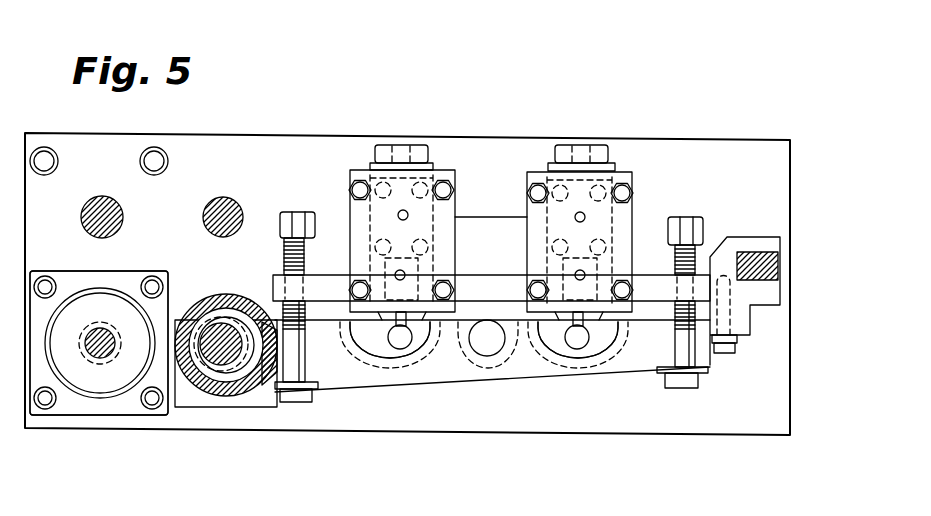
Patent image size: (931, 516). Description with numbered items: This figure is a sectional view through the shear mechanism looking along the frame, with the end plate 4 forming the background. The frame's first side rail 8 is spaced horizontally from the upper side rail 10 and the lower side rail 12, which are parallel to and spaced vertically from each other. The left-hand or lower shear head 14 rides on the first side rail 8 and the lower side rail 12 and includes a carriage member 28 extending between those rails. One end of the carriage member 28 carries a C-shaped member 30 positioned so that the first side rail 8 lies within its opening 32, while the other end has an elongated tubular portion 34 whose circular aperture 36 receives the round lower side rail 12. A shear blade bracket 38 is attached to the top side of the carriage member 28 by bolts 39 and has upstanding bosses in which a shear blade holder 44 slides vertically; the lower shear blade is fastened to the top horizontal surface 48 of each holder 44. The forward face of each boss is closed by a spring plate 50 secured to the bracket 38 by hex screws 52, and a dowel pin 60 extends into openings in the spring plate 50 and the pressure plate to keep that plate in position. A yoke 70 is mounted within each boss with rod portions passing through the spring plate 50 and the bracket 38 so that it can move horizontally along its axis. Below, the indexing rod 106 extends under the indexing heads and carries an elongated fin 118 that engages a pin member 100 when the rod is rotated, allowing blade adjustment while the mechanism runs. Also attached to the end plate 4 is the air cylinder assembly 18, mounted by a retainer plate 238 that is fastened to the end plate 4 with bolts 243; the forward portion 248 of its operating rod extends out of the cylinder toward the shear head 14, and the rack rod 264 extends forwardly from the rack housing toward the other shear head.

The end plate 4 is at (244, 146).
The rack rod 264 is at (102, 208).
The upper side rail 10 is at (222, 212).
The air cylinder assembly 18 is at (85, 378).
The bolts 243 is at (50, 283).
The retainer plate 238 is at (80, 284).
The forward portion of the operating rod 248 is at (105, 355).
The lower side rail 12 is at (222, 355).
The elongated tubular portion 34 is at (232, 305).
The circular aperture 36 is at (212, 318).
The carriage member 28 is at (540, 367).
The pin members 100 is at (418, 352).
The indexing rod 106 is at (400, 340).
The elongated fin 118 is at (397, 325).
The shear blade bracket 38 is at (508, 283).
The bolts 39 is at (293, 222).
The spring plate 50 is at (452, 207).
The hex screws 52 is at (360, 183).
The top horizontal surface 48 is at (385, 145).
The shear blade holder 44 is at (421, 150).
The dowel pin 60 is at (405, 212).
The yoke 70 is at (402, 275).
The left-hand shear head 14 is at (640, 197).
The C-shaped member 30 is at (735, 245).
The first side rail 8 is at (755, 268).
The opening 32 is at (757, 305).